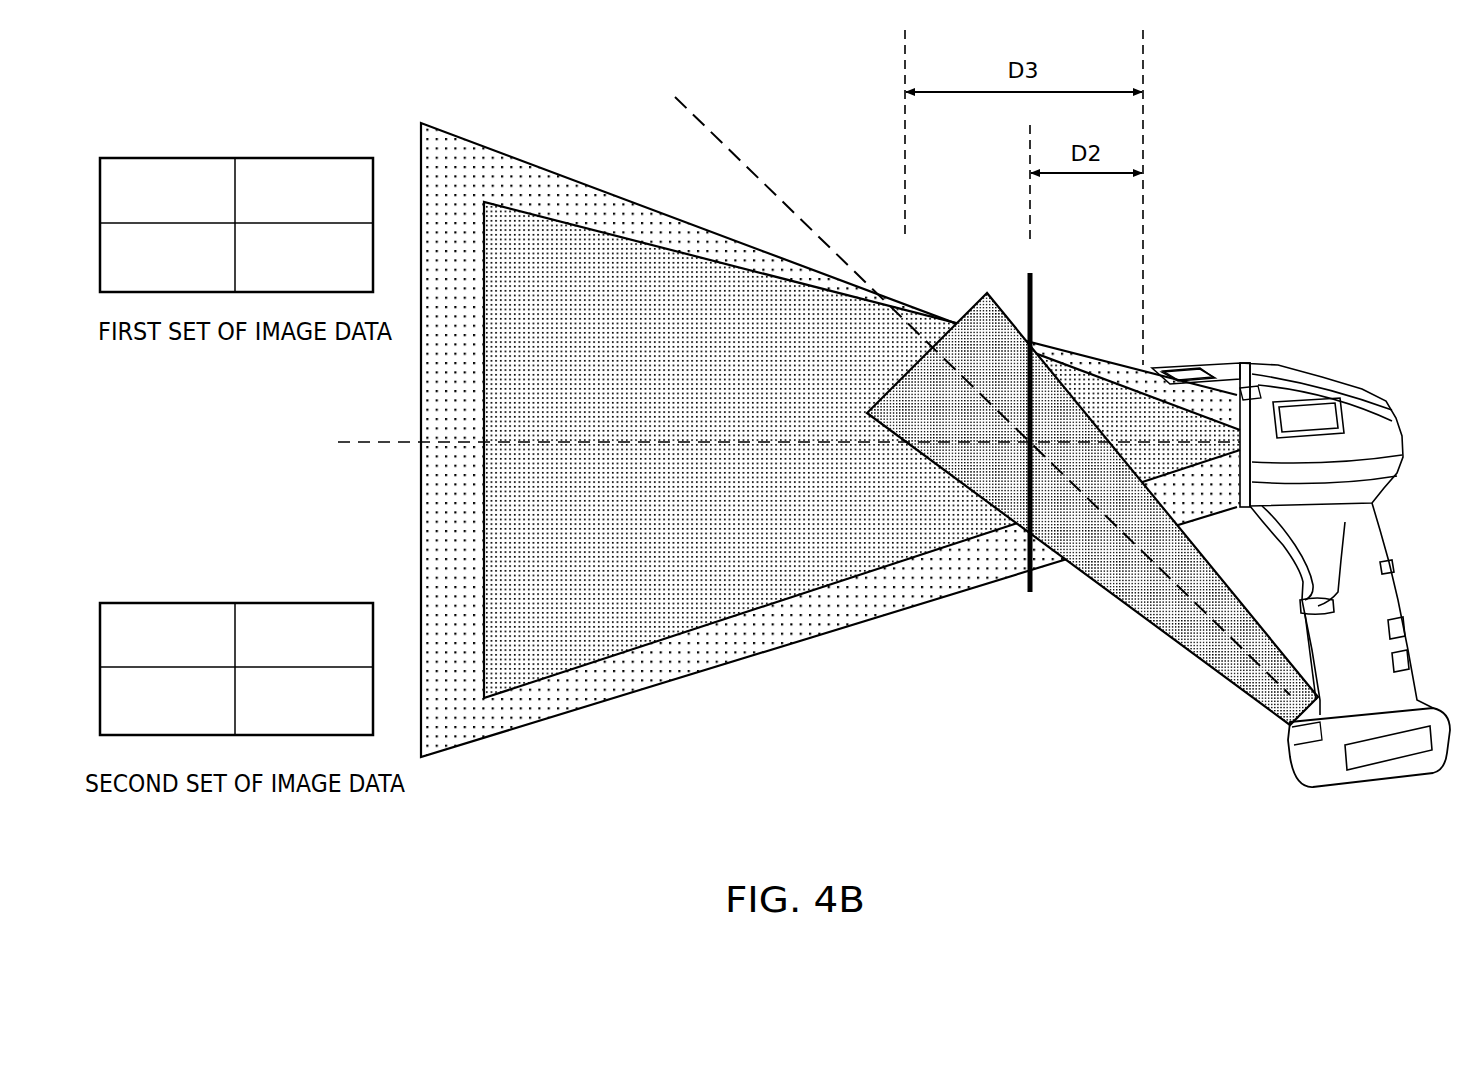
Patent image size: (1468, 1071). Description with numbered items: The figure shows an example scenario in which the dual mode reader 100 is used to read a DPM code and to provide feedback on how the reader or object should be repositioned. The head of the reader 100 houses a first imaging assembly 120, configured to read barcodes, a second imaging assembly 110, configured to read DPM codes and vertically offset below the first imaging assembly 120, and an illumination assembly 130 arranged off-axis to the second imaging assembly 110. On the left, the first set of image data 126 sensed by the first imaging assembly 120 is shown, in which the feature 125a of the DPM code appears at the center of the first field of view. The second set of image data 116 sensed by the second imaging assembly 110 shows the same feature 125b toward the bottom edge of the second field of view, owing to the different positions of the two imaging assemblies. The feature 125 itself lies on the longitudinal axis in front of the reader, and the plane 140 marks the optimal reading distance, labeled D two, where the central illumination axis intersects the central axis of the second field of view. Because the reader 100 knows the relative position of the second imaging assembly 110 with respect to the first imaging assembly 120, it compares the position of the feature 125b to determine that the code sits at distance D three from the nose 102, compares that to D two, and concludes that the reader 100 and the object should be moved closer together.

The reader 100 is at (1301, 575).
The nose 102 is at (1205, 360).
The second imaging assembly 110 is at (1318, 782).
The second set of image data 116 is at (253, 592).
The first imaging assembly 120 is at (1258, 500).
The feature 125 is at (894, 428).
The feature in first set of image data 125a is at (238, 222).
The feature in second set of image data 125b is at (238, 712).
The first set of image data 126 is at (253, 147).
The illumination assembly 130 is at (1243, 366).
The plane 140 is at (1027, 297).